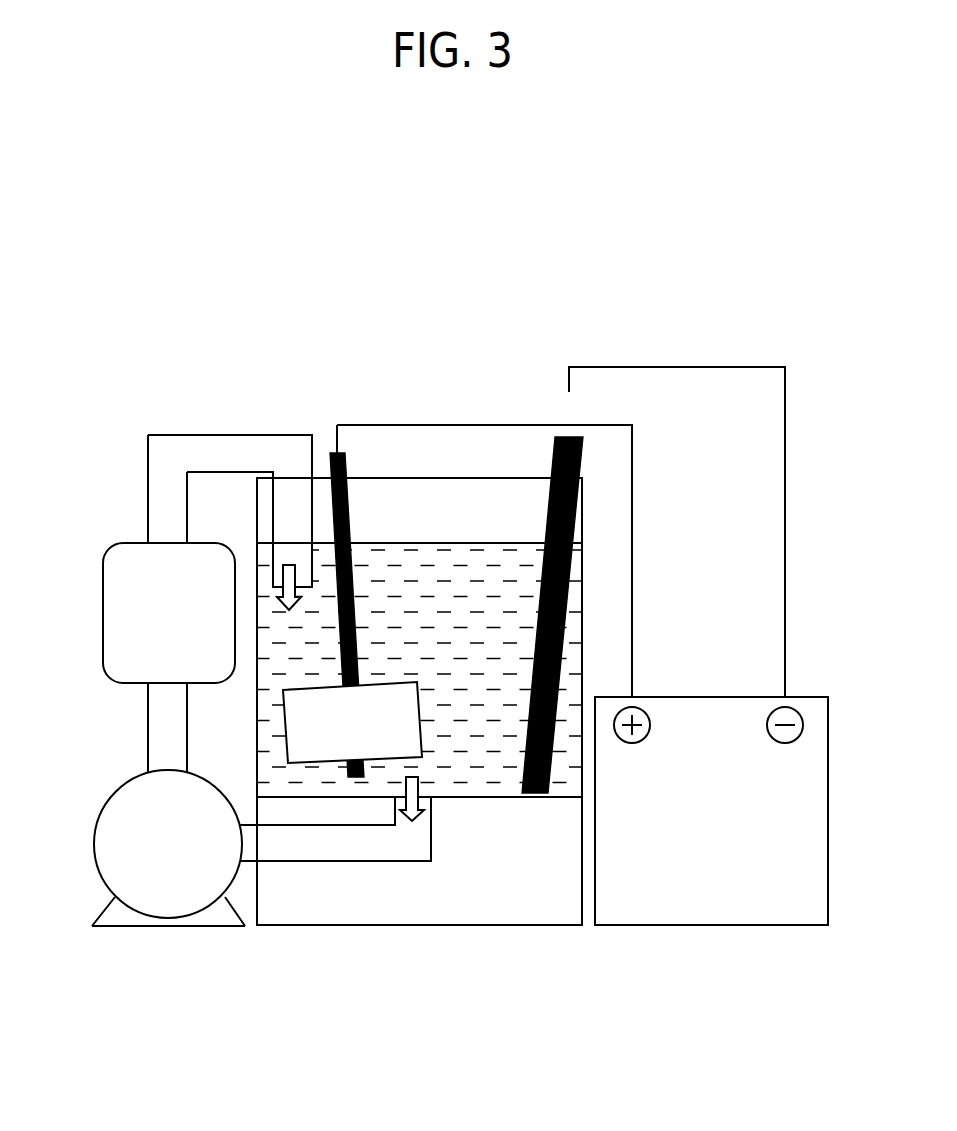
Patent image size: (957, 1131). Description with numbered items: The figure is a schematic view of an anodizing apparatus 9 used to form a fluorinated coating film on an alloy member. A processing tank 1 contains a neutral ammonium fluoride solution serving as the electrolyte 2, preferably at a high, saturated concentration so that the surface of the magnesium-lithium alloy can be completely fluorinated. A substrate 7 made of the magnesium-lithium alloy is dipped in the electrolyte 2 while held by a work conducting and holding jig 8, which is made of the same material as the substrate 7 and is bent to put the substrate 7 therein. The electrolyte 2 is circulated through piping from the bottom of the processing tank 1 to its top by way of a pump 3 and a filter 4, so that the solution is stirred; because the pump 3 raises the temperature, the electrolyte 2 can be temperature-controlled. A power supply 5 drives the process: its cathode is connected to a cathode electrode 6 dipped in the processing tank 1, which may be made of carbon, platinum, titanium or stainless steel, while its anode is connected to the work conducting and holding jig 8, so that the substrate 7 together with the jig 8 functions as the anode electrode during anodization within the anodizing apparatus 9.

The processing tank 1 is at (407, 477).
The electrolyte 2 is at (465, 550).
The pump 3 is at (105, 833).
The filter 4 is at (113, 625).
The power supply 5 is at (805, 799).
The cathode electrode 6 is at (570, 437).
The substrate 7 is at (307, 715).
The work conducting and holding jig 8 is at (337, 452).
The anodizing apparatus 9 is at (425, 295).